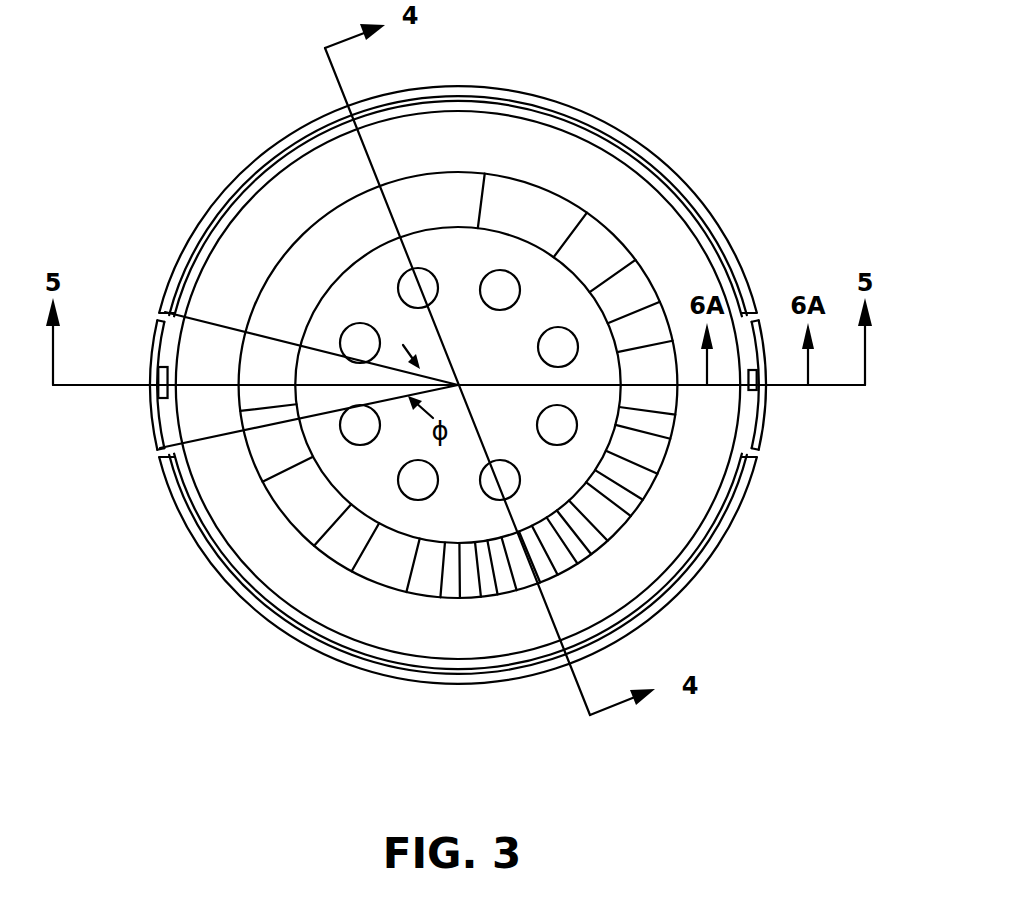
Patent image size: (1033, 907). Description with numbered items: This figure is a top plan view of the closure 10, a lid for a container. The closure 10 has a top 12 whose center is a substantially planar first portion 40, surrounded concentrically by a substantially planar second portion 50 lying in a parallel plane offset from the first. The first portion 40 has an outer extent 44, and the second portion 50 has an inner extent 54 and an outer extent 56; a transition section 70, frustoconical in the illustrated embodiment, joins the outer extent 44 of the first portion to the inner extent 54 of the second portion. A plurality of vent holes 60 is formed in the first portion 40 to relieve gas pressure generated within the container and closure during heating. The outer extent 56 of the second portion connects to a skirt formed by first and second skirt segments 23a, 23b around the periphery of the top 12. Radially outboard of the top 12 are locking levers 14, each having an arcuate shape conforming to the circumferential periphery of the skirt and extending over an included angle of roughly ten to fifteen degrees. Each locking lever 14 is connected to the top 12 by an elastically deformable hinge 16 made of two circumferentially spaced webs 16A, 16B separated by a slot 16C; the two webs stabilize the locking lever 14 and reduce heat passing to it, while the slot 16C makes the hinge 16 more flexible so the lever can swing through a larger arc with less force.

The closure 10 is at (708, 152).
The top 12 is at (317, 163).
The locking lever 14 is at (150, 403).
The hinge 16 is at (150, 423).
The web 16A is at (167, 337).
The web 16B is at (153, 440).
The slot 16C is at (153, 358).
The first skirt segment 23a is at (558, 97).
The second skirt segment 23b is at (717, 552).
The first portion 40 is at (387, 317).
The outer extent 44 is at (337, 448).
The second portion 50 is at (563, 153).
The inner extent 54 is at (280, 528).
The outer extent 56 is at (348, 640).
The vent hole 60 is at (495, 487).
The transition section 70 is at (448, 192).